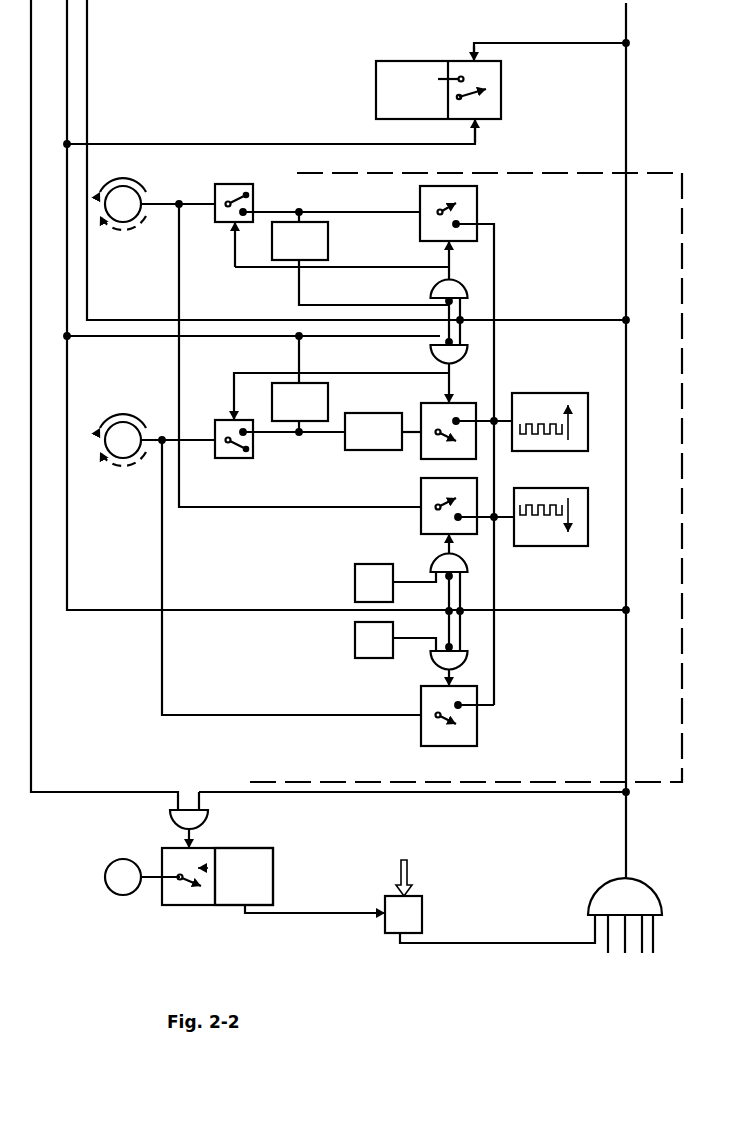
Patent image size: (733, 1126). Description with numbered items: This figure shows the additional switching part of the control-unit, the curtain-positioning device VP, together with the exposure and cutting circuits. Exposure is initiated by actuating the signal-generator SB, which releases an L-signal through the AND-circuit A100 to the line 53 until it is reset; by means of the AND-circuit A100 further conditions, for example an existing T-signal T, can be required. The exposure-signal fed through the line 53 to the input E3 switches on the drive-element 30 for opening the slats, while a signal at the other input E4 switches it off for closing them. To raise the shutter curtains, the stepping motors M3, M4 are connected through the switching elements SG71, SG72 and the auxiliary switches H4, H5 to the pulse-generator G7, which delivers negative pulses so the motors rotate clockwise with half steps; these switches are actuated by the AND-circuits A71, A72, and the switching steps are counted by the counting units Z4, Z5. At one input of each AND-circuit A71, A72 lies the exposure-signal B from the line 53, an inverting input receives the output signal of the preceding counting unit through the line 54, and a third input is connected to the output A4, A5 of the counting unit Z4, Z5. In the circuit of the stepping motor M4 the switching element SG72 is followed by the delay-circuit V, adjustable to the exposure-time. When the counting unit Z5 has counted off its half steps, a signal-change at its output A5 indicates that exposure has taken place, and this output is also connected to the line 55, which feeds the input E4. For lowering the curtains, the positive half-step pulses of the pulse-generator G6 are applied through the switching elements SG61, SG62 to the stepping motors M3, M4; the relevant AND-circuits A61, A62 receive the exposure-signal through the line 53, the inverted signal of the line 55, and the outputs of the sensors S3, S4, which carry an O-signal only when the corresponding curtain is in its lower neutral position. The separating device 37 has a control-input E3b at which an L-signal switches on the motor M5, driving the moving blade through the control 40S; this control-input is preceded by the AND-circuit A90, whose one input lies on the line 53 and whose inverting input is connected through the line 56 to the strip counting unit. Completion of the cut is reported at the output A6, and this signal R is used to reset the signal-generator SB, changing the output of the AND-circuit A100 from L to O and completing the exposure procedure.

The line 56 is at (31, 52).
The line 55 is at (67, 65).
The line 54 is at (83, 108).
The line 53 is at (626, 30).
The exposure-signal B is at (550, 41).
The curtain-positioning device VP is at (690, 508).
The drive-element 30 is at (386, 70).
The input E3 is at (473, 55).
The input E4 is at (480, 121).
The stepping motor M3 is at (141, 204).
The auxiliary switch H4 is at (231, 184).
The output A4 is at (299, 268).
The counting unit Z4 is at (328, 240).
The switching element SG71 is at (477, 208).
The AND-circuit A71 is at (430, 296).
The AND-circuit A72 is at (430, 357).
The output A5 is at (300, 383).
The counting unit Z5 is at (328, 400).
The auxiliary switch H5 is at (229, 458).
The stepping motor M4 is at (106, 442).
The delay-circuit V is at (391, 424).
The switching element SG72 is at (421, 451).
The pulse-generator G7 is at (551, 393).
The switching element SG61 is at (421, 499).
The pulse-generator G6 is at (565, 547).
The AND-circuit A61 is at (461, 569).
The sensor S3 is at (384, 564).
The sensor S4 is at (356, 658).
The AND-circuit A62 is at (462, 656).
The switching element SG62 is at (421, 729).
The AND-circuit A90 is at (176, 816).
The control-input E3b is at (192, 849).
The separating device 37 is at (291, 850).
The control 40S is at (245, 858).
The output A6 is at (245, 910).
The motor M5 is at (106, 884).
The signal R is at (364, 903).
The signal-generator SB is at (420, 922).
The AND-circuit A100 is at (657, 903).
The T-signal T is at (611, 968).